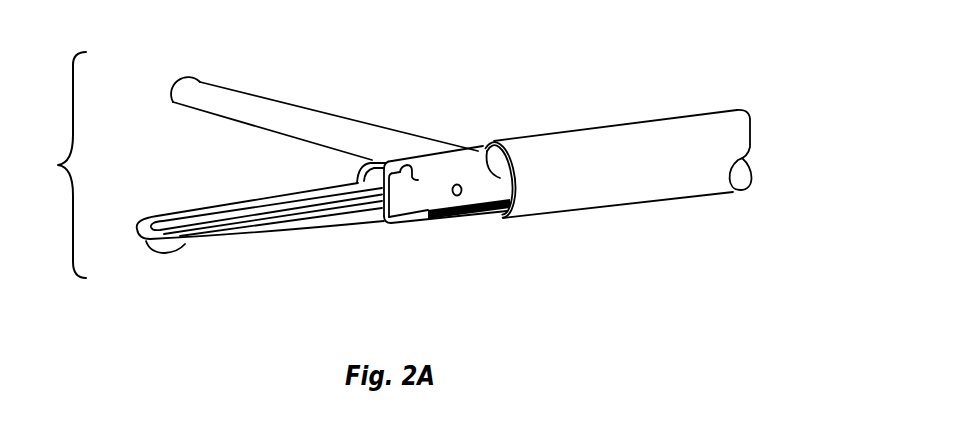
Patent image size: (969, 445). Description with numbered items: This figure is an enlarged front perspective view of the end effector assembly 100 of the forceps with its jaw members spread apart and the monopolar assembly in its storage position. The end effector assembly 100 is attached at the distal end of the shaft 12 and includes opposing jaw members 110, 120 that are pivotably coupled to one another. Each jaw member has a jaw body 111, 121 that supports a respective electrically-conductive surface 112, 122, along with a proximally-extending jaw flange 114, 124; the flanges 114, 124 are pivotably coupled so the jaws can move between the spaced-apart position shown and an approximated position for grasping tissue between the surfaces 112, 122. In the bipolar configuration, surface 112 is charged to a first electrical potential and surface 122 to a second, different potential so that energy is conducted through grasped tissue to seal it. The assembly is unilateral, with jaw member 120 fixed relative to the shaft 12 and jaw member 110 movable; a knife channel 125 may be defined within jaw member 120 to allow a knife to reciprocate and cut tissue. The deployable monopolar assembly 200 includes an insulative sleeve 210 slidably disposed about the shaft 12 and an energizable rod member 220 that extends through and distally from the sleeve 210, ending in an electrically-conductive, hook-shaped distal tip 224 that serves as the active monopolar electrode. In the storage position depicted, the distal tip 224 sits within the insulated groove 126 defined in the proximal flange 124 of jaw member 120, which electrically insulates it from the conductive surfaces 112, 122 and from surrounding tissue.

The end effector assembly 100 is at (60, 165).
The jaw member 110 is at (295, 92).
The jaw body 111 is at (298, 123).
The electrically-conductive surface 112 is at (203, 122).
The jaw flange 114 is at (447, 147).
The shaft 12 is at (484, 143).
The jaw member 120 is at (261, 228).
The jaw body 121 is at (273, 231).
The electrically-conductive surface 122 is at (185, 229).
The jaw flange 124 is at (468, 198).
The knife channel 125 is at (214, 207).
The insulated groove 126 is at (410, 160).
The deployable monopolar assembly 200 is at (445, 188).
The insulative sleeve 210 is at (645, 194).
The energizable rod member 220 is at (425, 225).
The distal tip 224 is at (387, 226).